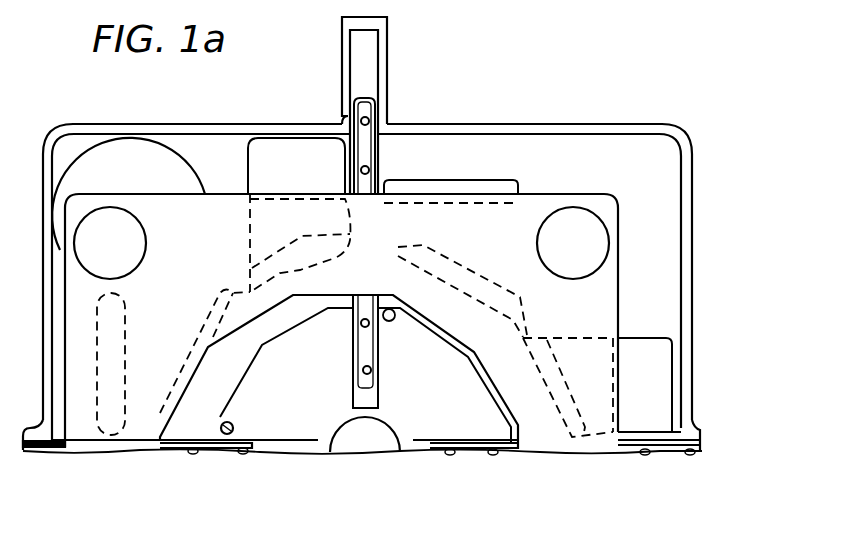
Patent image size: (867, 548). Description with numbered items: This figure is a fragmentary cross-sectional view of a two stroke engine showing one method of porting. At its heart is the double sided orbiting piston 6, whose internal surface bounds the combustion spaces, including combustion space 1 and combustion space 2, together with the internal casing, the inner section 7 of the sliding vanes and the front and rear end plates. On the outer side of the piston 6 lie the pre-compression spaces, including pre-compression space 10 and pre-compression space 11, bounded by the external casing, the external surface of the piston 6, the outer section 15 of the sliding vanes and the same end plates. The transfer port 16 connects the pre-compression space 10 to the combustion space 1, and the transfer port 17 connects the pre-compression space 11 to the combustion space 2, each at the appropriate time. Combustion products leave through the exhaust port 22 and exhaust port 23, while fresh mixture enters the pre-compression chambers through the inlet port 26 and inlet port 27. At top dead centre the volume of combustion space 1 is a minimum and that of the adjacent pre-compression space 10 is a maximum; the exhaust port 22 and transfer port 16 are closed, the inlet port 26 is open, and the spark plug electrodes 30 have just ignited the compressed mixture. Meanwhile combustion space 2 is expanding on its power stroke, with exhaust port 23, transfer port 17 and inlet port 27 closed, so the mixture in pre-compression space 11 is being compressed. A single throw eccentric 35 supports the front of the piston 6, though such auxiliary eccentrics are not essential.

The combustion space 1 is at (467, 342).
The combustion space 2 is at (224, 372).
The double sided orbiting piston 6 is at (162, 337).
The inner section of the sliding vanes 7 is at (213, 482).
The pre-compression space 10 is at (646, 191).
The pre-compression space 11 is at (223, 175).
The outer section of the sliding vanes 15 is at (737, 458).
The transfer port 16 is at (597, 387).
The transfer port 17 is at (299, 215).
The exhaust port 22 is at (481, 289).
The exhaust port 23 is at (212, 313).
The inlet port 26 is at (437, 186).
The inlet port 27 is at (111, 364).
The spark plug electrodes 30 is at (395, 318).
The single throw eccentric 35 is at (155, 162).